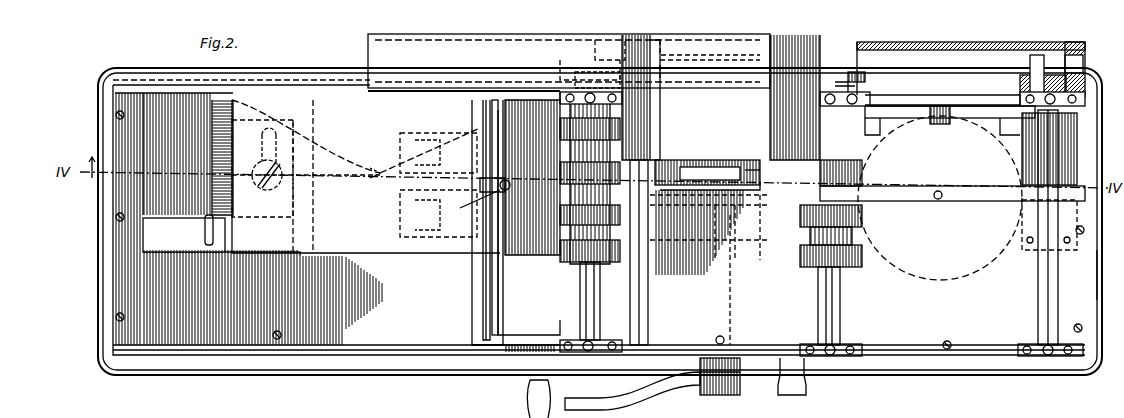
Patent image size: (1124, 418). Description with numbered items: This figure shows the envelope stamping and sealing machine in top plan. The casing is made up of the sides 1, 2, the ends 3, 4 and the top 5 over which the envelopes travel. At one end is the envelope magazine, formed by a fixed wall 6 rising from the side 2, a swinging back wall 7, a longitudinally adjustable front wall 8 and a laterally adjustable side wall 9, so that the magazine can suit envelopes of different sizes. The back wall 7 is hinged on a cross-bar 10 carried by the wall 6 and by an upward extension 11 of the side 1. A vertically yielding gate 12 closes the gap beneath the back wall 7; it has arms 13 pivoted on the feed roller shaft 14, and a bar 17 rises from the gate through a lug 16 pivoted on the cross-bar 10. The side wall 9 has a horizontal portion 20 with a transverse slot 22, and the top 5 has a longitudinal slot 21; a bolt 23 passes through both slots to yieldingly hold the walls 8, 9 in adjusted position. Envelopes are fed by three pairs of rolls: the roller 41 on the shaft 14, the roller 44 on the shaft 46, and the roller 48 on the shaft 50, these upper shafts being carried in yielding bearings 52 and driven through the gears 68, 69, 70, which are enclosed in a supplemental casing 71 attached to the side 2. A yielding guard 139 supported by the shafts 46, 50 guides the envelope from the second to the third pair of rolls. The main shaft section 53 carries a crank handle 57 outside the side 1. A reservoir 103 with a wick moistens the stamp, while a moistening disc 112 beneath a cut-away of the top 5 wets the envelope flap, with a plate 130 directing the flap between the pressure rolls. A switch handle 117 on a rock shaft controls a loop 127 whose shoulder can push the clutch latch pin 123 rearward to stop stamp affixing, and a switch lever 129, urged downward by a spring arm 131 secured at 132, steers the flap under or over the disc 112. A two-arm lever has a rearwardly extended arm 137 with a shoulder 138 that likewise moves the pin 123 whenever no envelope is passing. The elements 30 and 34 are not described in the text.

The side 1 is at (370, 348).
The side 2 is at (982, 105).
The end 3 is at (100, 278).
The end 4 is at (1099, 282).
The top 5 is at (543, 257).
The fixed wall 6 is at (412, 90).
The swinging back wall 7 is at (472, 272).
The adjustable front wall 8 is at (135, 143).
The adjustable side wall 9 is at (158, 252).
The cross-bar 10 is at (488, 292).
The upward extension 11 is at (495, 350).
The vertically yielding gate 12 is at (500, 292).
The arms 13 is at (530, 337).
The feed roller shaft 14 is at (585, 300).
The lug 16 is at (480, 186).
The bar 17 is at (450, 213).
The horizontal portion 20 is at (195, 230).
The elongated slot 21 is at (357, 180).
The transversely elongated slot 22 is at (266, 190).
The bolt 23 is at (278, 180).
The column 30 is at (574, 178).
The coil block 34 is at (573, 151).
The roller 41 is at (590, 233).
The roller 44 is at (831, 213).
The shaft 46 is at (818, 302).
The roller 48 is at (1049, 149).
The shaft 50 is at (1040, 296).
The yielding bearings 52 is at (570, 94).
The main shaft section 53 is at (732, 287).
The crank handle 57 is at (606, 408).
The gear 68 is at (568, 72).
The gear 69 is at (855, 78).
The gear 70 is at (1045, 92).
The supplemental casing 71 is at (971, 69).
The reservoir 103 is at (640, 338).
The moistening disc 112 is at (960, 277).
The switch handle 117 is at (790, 375).
The pin 123 is at (700, 170).
The loop 127 is at (720, 176).
The switch lever 129 is at (880, 132).
The plate 130 is at (1000, 128).
The spring arm 131 is at (900, 118).
The securing point 132 is at (942, 92).
The rearwardly extended arm 137 is at (668, 160).
The shoulder 138 is at (745, 166).
The yielding guard 139 is at (965, 202).